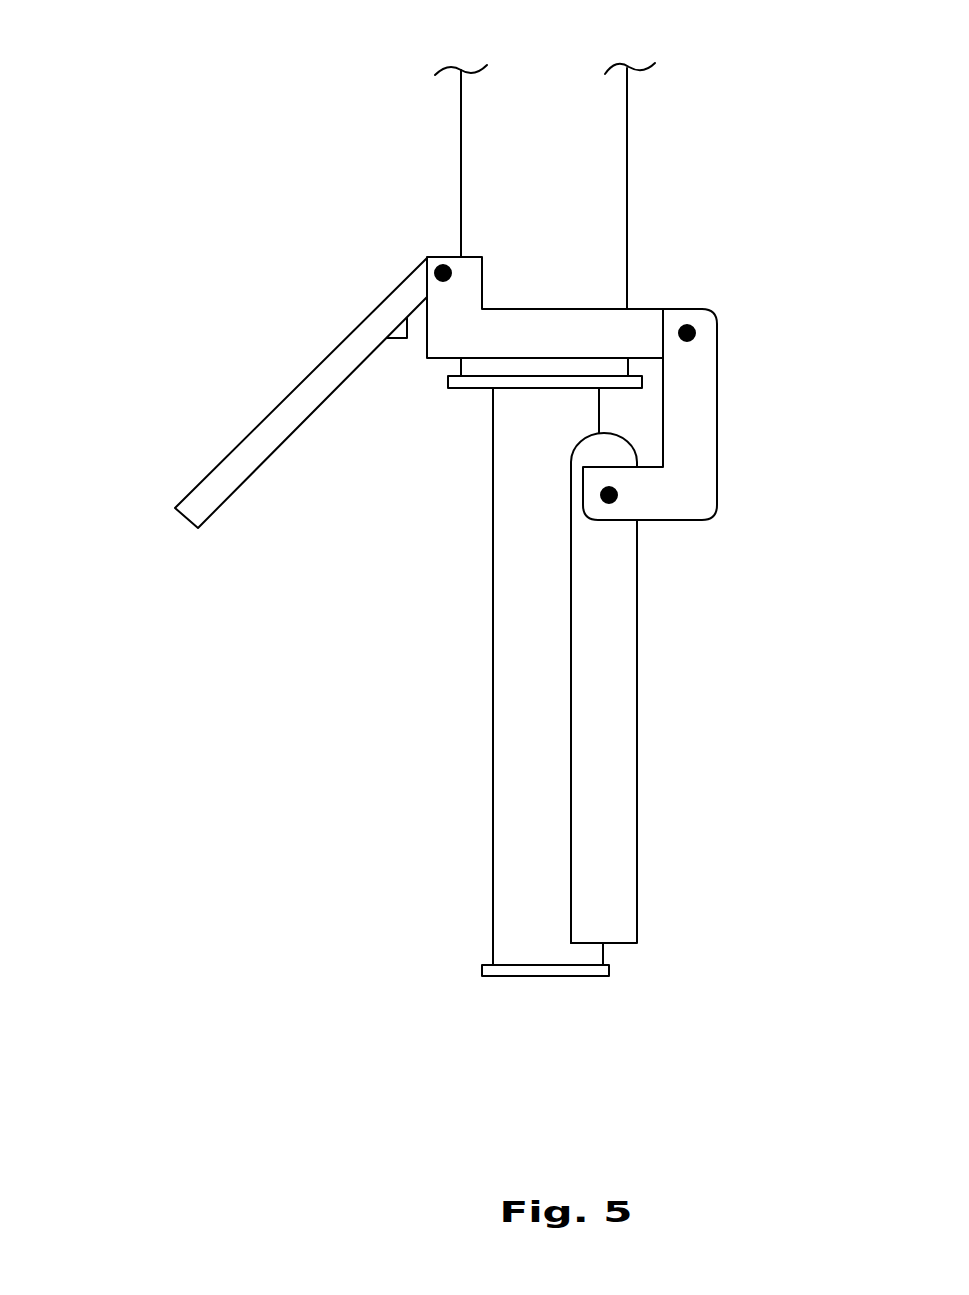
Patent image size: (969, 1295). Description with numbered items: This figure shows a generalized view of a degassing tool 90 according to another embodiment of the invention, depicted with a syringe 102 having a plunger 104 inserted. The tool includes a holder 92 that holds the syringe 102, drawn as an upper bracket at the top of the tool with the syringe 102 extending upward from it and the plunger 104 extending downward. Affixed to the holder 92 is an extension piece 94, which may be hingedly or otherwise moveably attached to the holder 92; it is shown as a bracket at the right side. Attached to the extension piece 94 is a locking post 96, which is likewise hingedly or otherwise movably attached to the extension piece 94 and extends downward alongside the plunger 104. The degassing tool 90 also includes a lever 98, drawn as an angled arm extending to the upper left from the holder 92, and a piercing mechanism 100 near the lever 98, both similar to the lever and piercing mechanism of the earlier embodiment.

The degassing tool 90 is at (226, 56).
The holder 92 is at (435, 360).
The extension piece 94 is at (717, 419).
The locking post 96 is at (638, 680).
The lever 98 is at (313, 368).
The piercing mechanism 100 is at (398, 338).
The syringe 102 is at (627, 205).
The plunger 104 is at (493, 635).